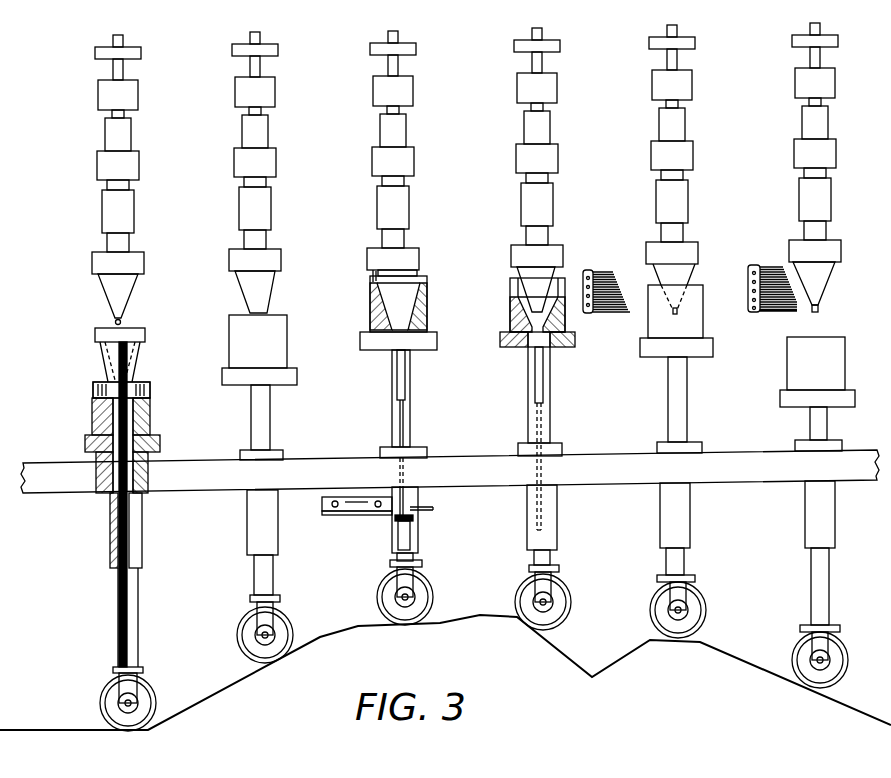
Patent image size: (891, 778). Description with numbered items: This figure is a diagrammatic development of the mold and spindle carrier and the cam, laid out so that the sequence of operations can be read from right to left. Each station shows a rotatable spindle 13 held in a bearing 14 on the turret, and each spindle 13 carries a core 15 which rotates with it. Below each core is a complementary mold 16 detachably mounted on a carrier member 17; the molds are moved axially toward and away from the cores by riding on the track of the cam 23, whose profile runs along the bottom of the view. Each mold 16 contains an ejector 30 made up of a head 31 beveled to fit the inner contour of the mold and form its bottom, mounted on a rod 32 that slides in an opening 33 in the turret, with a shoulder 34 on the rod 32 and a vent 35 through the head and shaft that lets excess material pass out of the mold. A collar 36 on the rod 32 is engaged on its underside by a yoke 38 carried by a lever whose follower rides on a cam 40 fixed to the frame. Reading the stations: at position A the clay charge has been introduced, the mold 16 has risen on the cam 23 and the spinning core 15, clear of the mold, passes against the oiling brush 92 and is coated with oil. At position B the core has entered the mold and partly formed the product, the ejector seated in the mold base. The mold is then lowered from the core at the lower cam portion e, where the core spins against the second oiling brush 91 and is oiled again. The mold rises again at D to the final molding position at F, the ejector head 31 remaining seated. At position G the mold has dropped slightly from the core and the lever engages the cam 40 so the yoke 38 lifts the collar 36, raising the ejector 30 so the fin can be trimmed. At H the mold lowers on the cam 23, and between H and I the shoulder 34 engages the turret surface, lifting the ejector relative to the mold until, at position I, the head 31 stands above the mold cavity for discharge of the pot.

The rotatable spindle 13 is at (133, 213).
The bearing 14 is at (138, 95).
The core 15 is at (517, 270).
The mold 16 is at (510, 308).
The carrier member 17 is at (500, 343).
The cam 23 is at (362, 627).
The ejector 30 is at (150, 386).
The ejector head 31 is at (126, 378).
The ejector rod 32 is at (410, 383).
The opening 33 is at (373, 272).
The shoulder 34 is at (400, 403).
The vent 35 is at (135, 356).
The collar 36 is at (430, 506).
The yoke 38 is at (415, 518).
The cam 40 is at (336, 515).
The oiling brush 91 is at (605, 272).
The oiling brush 92 is at (752, 265).
The position I is at (135, 383).
The position H is at (273, 425).
The position G is at (391, 328).
The position D is at (659, 329).
The position B is at (687, 403).
The position A is at (845, 363).
The position F is at (463, 613).
The cam portion e is at (603, 668).